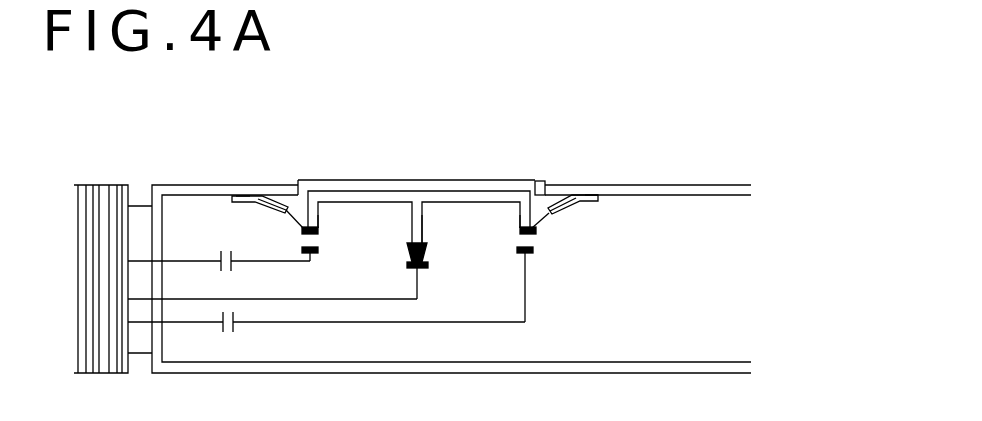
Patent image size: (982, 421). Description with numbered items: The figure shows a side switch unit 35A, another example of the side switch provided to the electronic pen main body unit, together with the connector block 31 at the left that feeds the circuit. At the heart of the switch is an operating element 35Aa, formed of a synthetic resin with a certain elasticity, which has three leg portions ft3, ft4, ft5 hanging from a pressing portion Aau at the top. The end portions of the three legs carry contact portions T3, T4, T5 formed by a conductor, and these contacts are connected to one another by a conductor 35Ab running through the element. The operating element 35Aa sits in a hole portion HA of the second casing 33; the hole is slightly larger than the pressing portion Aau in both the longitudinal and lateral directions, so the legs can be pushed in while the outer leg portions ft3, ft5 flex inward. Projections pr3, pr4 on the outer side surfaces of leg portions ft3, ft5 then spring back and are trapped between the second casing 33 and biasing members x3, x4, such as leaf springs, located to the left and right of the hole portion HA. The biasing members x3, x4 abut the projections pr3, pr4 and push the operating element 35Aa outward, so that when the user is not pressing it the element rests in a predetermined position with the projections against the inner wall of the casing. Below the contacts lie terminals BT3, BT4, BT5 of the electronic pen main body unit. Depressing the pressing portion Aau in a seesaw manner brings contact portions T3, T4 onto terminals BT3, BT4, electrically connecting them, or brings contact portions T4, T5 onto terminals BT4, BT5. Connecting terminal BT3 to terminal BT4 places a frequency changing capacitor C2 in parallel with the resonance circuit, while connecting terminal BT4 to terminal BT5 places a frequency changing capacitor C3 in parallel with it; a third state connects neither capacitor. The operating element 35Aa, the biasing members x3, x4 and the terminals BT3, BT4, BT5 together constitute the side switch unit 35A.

The connector / feeding circuit block 31 is at (100, 373).
The second casing 33 is at (641, 185).
The side switch unit 35A is at (426, 89).
The operating element 35Aa is at (409, 166).
The conductor 35Ab is at (334, 190).
The pressing portion Aau is at (433, 190).
The hole portion HA is at (540, 180).
The projection pr3 is at (295, 190).
The projection pr4 is at (547, 195).
The biasing member x3 is at (251, 201).
The biasing member x4 is at (600, 203).
The contact portion T3 is at (304, 231).
The contact portion T4 is at (409, 254).
The contact portion T5 is at (538, 232).
The leg portion ft3 is at (320, 204).
The leg portion ft4 is at (428, 226).
The leg portion ft5 is at (513, 209).
The terminal BT3 is at (316, 254).
The terminal BT4 is at (428, 266).
The terminal BT5 is at (535, 251).
The frequency changing capacitor C2 is at (230, 271).
The frequency changing capacitor C3 is at (227, 334).